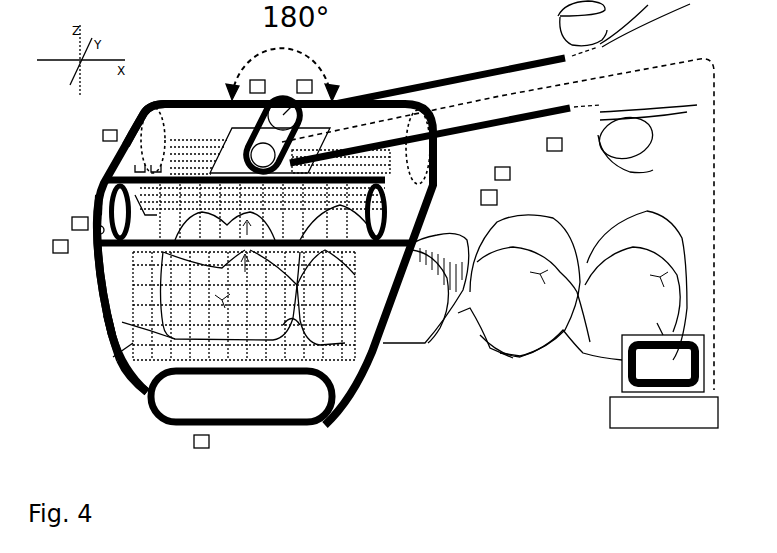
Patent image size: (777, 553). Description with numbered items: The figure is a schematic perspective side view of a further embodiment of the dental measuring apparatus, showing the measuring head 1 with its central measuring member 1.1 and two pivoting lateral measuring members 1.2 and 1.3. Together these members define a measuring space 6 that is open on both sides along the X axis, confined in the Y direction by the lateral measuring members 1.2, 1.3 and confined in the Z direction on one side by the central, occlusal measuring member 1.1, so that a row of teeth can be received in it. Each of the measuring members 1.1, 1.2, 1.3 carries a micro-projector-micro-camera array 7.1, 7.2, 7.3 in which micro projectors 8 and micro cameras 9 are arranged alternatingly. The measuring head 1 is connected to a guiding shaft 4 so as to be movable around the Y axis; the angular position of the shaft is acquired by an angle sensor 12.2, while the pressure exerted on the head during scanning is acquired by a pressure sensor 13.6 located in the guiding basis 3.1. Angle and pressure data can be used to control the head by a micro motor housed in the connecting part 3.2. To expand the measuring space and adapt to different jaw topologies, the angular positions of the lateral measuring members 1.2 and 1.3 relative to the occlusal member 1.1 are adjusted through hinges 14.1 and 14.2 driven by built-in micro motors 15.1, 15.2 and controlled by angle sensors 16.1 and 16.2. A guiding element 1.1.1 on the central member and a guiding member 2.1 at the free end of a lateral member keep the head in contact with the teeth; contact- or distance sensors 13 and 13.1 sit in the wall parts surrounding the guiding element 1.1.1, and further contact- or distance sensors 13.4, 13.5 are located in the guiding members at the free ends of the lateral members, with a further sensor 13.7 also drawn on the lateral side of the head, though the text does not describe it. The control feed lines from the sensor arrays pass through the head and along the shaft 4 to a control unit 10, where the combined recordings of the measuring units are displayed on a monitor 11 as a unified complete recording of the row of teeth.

The measuring head 1 is at (154, 90).
The central measuring member 1.1 is at (173, 101).
The guiding element 1.1.1 is at (88, 242).
The lateral measuring member 1.2 is at (107, 308).
The lateral measuring member 1.3 is at (147, 102).
The guiding member 2.1 is at (318, 400).
The guiding basis 3.1 is at (226, 148).
The connecting part 3.2 is at (240, 123).
The guiding shaft 4 is at (437, 92).
The measuring space 6 is at (92, 293).
The micro-projector-micro-camera array 7.1 is at (133, 157).
The micro-projector-micro-camera array 7.2 is at (108, 316).
The micro-projector-micro-camera array 7.3 is at (127, 166).
The micro projector 8 is at (117, 358).
The micro camera 9 is at (123, 372).
The control unit 10 is at (633, 412).
The monitor 11 is at (663, 362).
The angle sensor 12.2 is at (312, 82).
The contact- or distance sensor 13 is at (90, 242).
The contact- or distance sensor 13.1 is at (221, 427).
The contact- or distance sensor 13.4 is at (385, 258).
The contact- or distance sensor 13.5 is at (440, 152).
The pressure sensor 13.6 is at (257, 126).
The sensor 13.7 is at (433, 214).
The hinge 14.1 is at (133, 117).
The hinge 14.2 is at (97, 202).
The micro motor 15.1 is at (130, 130).
The micro motor 15.2 is at (97, 211).
The angle sensor 16.1 is at (128, 136).
The angle sensor 16.2 is at (98, 222).